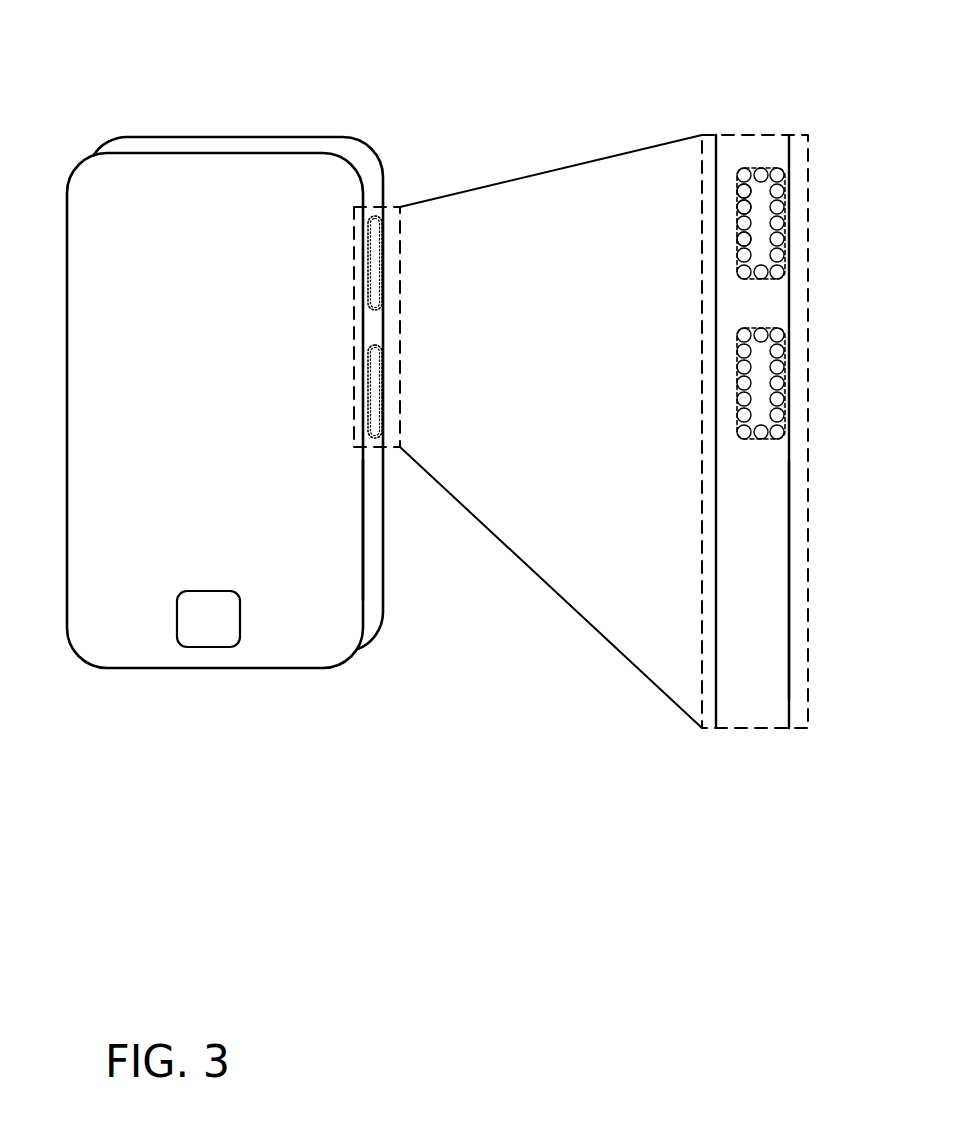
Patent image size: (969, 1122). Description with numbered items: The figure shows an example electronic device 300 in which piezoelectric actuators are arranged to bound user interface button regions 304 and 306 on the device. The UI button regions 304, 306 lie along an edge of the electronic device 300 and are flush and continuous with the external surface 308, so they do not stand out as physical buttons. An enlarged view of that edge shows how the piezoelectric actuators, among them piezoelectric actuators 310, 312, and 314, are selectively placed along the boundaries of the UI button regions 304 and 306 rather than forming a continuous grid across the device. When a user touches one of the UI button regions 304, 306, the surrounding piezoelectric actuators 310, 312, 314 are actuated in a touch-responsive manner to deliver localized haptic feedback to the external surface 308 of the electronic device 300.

The electronic device 300 is at (299, 87).
The UI button region 304 is at (378, 225).
The UI button region 306 is at (382, 378).
The external surface 308 is at (374, 548).
The piezoelectric actuator 310 is at (746, 190).
The piezoelectric actuator 312 is at (746, 215).
The piezoelectric actuator 314 is at (746, 242).